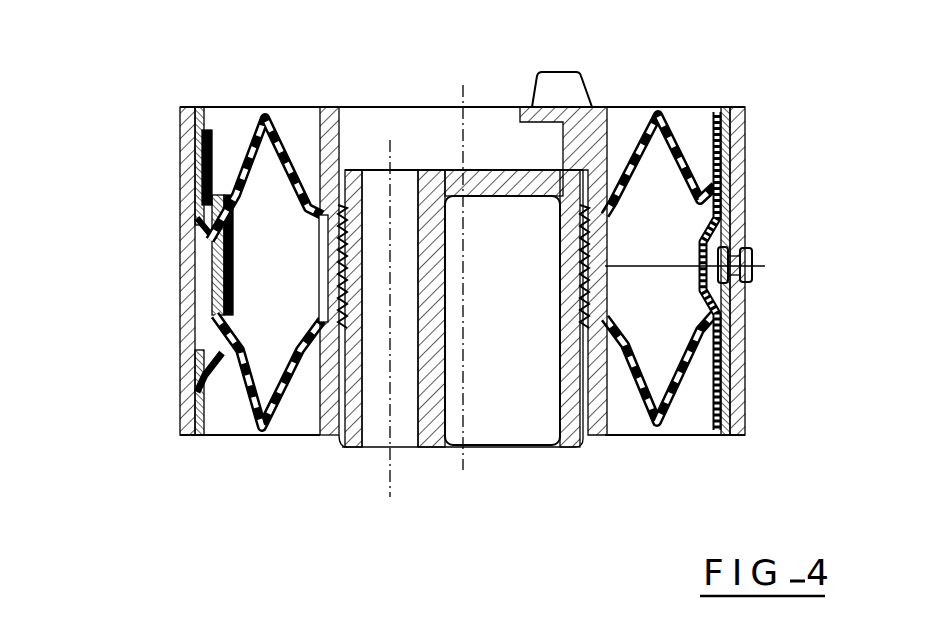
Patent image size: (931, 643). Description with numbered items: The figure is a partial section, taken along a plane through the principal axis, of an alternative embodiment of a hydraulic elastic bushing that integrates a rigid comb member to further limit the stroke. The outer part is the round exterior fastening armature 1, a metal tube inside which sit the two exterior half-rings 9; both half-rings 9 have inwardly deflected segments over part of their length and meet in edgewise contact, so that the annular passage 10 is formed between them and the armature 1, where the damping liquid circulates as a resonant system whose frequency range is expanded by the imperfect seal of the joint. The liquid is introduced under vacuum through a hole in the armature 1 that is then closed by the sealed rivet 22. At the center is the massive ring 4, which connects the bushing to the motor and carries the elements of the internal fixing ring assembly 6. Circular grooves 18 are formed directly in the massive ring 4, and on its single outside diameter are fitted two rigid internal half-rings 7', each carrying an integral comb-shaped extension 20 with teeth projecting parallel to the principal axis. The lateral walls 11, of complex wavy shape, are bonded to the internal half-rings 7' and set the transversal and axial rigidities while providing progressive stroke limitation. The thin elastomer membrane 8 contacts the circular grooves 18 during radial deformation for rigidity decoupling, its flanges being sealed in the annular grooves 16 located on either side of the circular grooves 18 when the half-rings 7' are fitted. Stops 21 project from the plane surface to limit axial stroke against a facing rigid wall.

The round exterior fastening armature 1 is at (185, 418).
The massive ring 4 is at (440, 170).
The internal fixing ring assembly 6 is at (473, 478).
The internal half-rings 7' is at (434, 269).
The membrane 8 is at (369, 265).
The exterior half-rings 9 is at (192, 160).
The annular passage 10 is at (212, 298).
The lateral walls 11 is at (240, 128).
The annular grooves 16 is at (345, 344).
The circular grooves 18 is at (227, 272).
The comb-shaped extension 20 is at (350, 232).
The stops 21 is at (580, 88).
The sealed rivet 22 is at (757, 258).